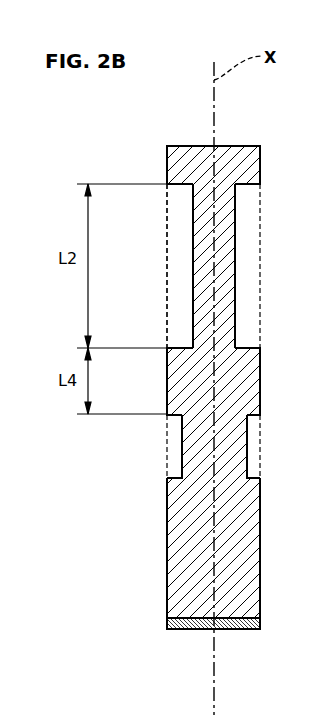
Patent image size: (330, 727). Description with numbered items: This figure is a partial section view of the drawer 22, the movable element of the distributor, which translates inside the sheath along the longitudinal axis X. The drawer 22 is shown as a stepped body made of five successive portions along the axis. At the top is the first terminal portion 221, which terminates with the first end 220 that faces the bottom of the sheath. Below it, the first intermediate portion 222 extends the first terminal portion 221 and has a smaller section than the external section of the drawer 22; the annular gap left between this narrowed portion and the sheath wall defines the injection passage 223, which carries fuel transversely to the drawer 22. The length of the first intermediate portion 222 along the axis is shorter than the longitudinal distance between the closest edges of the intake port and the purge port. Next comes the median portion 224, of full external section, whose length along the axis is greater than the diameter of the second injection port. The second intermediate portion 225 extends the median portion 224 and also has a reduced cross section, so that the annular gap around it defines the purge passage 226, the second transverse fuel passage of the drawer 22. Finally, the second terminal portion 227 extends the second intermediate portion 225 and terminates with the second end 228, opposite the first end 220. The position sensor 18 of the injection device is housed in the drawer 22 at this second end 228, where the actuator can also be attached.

The drawer 22 is at (172, 124).
The first end 220 is at (236, 146).
The first terminal portion 221 is at (167, 164).
The first intermediate portion 222 is at (235, 257).
The injection passage 223 is at (178, 259).
The median portion 224 is at (259, 380).
The second intermediate portion 225 is at (247, 447).
The purge passage 226 is at (172, 446).
The second terminal portion 227 is at (259, 543).
The second end 228 is at (236, 629).
The position sensor 18 is at (194, 622).